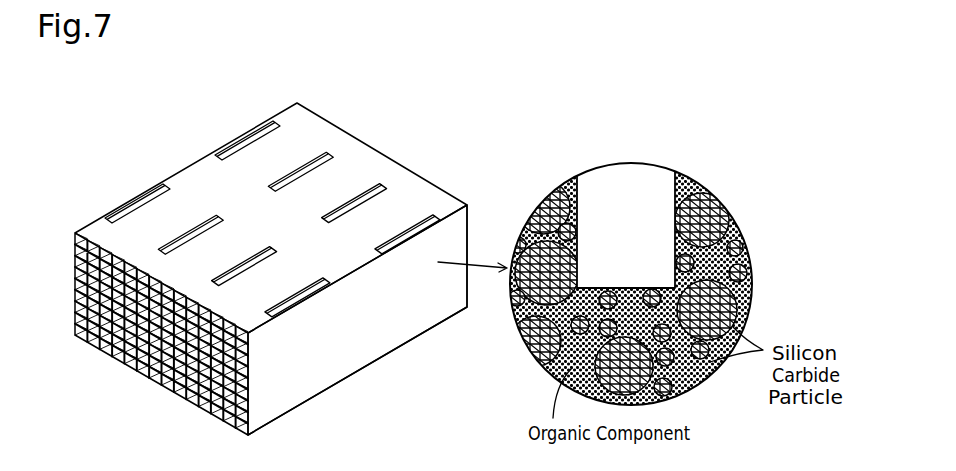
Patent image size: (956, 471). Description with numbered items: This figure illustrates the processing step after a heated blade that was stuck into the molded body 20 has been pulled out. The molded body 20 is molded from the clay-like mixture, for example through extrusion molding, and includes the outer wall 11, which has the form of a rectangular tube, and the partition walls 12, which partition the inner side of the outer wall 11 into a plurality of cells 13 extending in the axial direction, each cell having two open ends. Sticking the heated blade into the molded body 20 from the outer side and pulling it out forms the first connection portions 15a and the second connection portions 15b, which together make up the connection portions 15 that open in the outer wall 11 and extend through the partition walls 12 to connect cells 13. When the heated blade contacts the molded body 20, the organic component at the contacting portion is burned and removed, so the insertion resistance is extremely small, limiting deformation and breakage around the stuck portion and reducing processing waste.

The molded body 20 is at (394, 123).
The outer wall 11 is at (358, 359).
The partition walls 12 is at (169, 382).
The cells 13 is at (155, 381).
The connection portion 15 is at (587, 188).
The first connection portion 15a is at (147, 197).
The second connection portion 15b is at (238, 148).